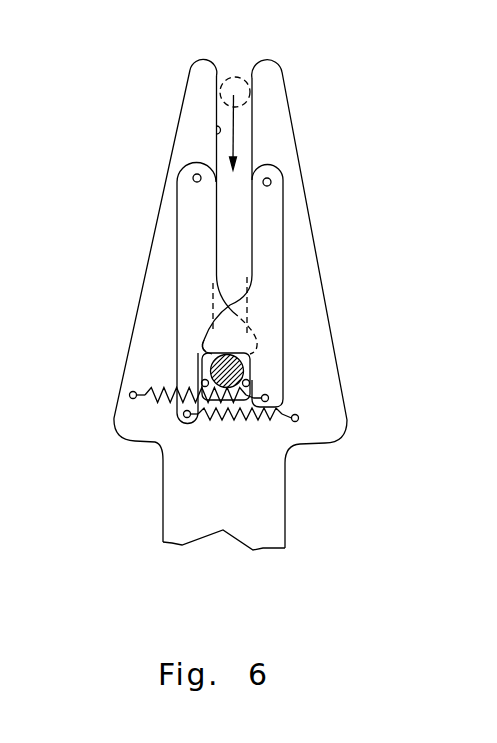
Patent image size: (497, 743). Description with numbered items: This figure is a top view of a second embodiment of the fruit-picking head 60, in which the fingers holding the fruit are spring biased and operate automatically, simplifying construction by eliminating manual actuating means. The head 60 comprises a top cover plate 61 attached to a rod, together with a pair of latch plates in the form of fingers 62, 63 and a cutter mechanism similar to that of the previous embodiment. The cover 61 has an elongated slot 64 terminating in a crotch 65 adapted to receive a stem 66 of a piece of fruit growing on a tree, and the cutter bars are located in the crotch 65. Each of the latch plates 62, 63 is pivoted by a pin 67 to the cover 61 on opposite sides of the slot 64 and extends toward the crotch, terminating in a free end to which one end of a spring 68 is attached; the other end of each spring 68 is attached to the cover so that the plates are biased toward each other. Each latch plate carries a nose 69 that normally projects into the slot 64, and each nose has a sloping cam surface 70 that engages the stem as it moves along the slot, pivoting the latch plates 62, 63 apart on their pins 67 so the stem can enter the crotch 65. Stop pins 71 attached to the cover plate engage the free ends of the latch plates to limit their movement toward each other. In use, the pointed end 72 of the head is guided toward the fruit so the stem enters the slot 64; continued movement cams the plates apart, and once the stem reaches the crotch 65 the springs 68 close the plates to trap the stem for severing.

The head 60 is at (307, 148).
The top cover plate 61 is at (328, 317).
The latch plate 62 is at (272, 237).
The latch plate 63 is at (188, 225).
The elongated slot 64 is at (214, 132).
The crotch 65 is at (250, 362).
The stem 66 is at (235, 76).
The pin 67 is at (271, 182).
The spring 68 is at (163, 398).
The nose 69 is at (203, 341).
The cam surface 70 is at (226, 307).
The stop pin 71 is at (250, 383).
The pointed end 72 is at (200, 62).